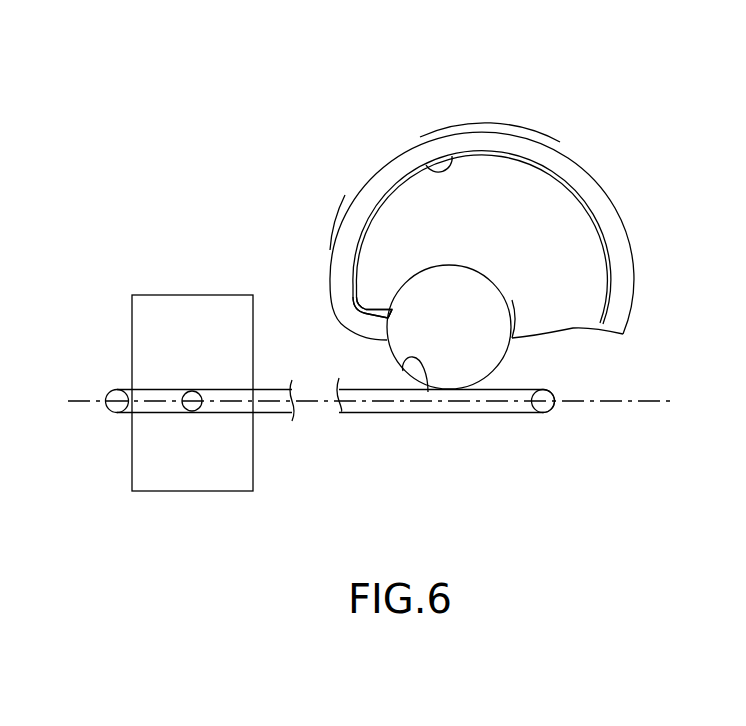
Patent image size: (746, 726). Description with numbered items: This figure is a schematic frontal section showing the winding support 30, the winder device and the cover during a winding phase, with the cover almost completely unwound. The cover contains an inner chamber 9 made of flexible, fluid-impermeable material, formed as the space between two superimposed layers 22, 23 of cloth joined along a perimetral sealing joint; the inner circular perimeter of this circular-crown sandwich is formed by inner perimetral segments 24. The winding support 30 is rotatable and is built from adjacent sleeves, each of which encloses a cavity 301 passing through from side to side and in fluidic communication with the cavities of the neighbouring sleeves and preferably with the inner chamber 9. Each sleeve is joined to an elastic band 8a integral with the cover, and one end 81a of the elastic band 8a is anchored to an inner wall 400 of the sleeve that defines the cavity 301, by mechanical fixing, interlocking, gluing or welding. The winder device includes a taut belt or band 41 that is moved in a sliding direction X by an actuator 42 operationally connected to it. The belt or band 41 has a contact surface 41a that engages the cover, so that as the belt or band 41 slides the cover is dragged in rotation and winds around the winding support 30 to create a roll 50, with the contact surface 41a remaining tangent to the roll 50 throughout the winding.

The inner chamber 9 is at (380, 182).
The layer 23 is at (508, 133).
The layer 22 is at (423, 167).
The cavity 301 is at (480, 300).
The elastic band 8a is at (590, 212).
The winding support 30 is at (531, 290).
The roll 50 is at (332, 194).
The inner perimetral segment 24 is at (373, 295).
The actuator 42 is at (167, 327).
The end of elastic band 81a is at (407, 320).
The taut belt or band 41 is at (393, 423).
The inner wall of the sleeve 400 is at (428, 392).
The contact surface 41a is at (495, 380).
The sliding direction X is at (660, 400).